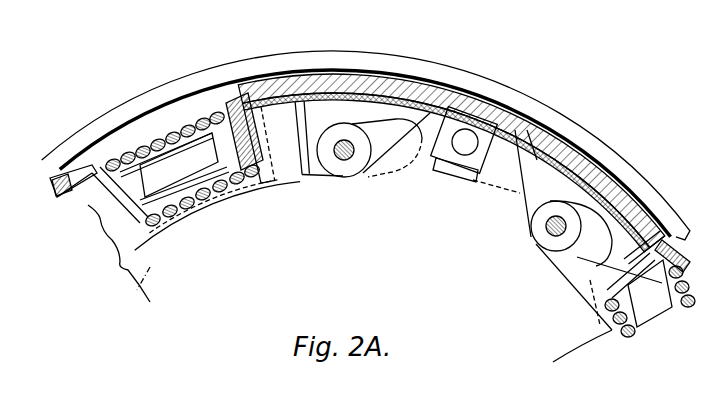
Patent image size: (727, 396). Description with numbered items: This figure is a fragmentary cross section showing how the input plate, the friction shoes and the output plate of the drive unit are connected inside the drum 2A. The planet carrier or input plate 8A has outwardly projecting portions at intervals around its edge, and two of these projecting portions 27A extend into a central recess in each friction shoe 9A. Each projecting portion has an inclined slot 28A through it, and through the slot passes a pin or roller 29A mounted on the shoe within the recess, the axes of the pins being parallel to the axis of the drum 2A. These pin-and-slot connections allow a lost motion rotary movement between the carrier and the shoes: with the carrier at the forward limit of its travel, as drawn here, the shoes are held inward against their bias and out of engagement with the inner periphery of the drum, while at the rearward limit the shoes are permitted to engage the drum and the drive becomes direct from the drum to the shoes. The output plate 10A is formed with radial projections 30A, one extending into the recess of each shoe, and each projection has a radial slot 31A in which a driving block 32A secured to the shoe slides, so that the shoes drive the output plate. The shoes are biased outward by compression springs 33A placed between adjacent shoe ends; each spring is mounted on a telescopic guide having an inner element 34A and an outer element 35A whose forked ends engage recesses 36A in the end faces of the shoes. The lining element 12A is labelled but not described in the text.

The drum 2A is at (438, 67).
The planet carrier or input plate 8A is at (137, 290).
The friction shoes 9A is at (280, 113).
The output plate 10A is at (128, 267).
The lining backing strip 12A is at (57, 172).
The projecting portions 27A is at (327, 108).
The slot 28A is at (103, 228).
The pin or roller 29A is at (345, 177).
The radial projections 30A is at (530, 160).
The radial slot 31A is at (447, 173).
The driving block 32A is at (470, 167).
The compression springs 33A is at (127, 153).
The inner element of telescopic guide 34A is at (183, 175).
The outer element of telescopic guide 35A is at (173, 137).
The recesses 36A is at (277, 180).